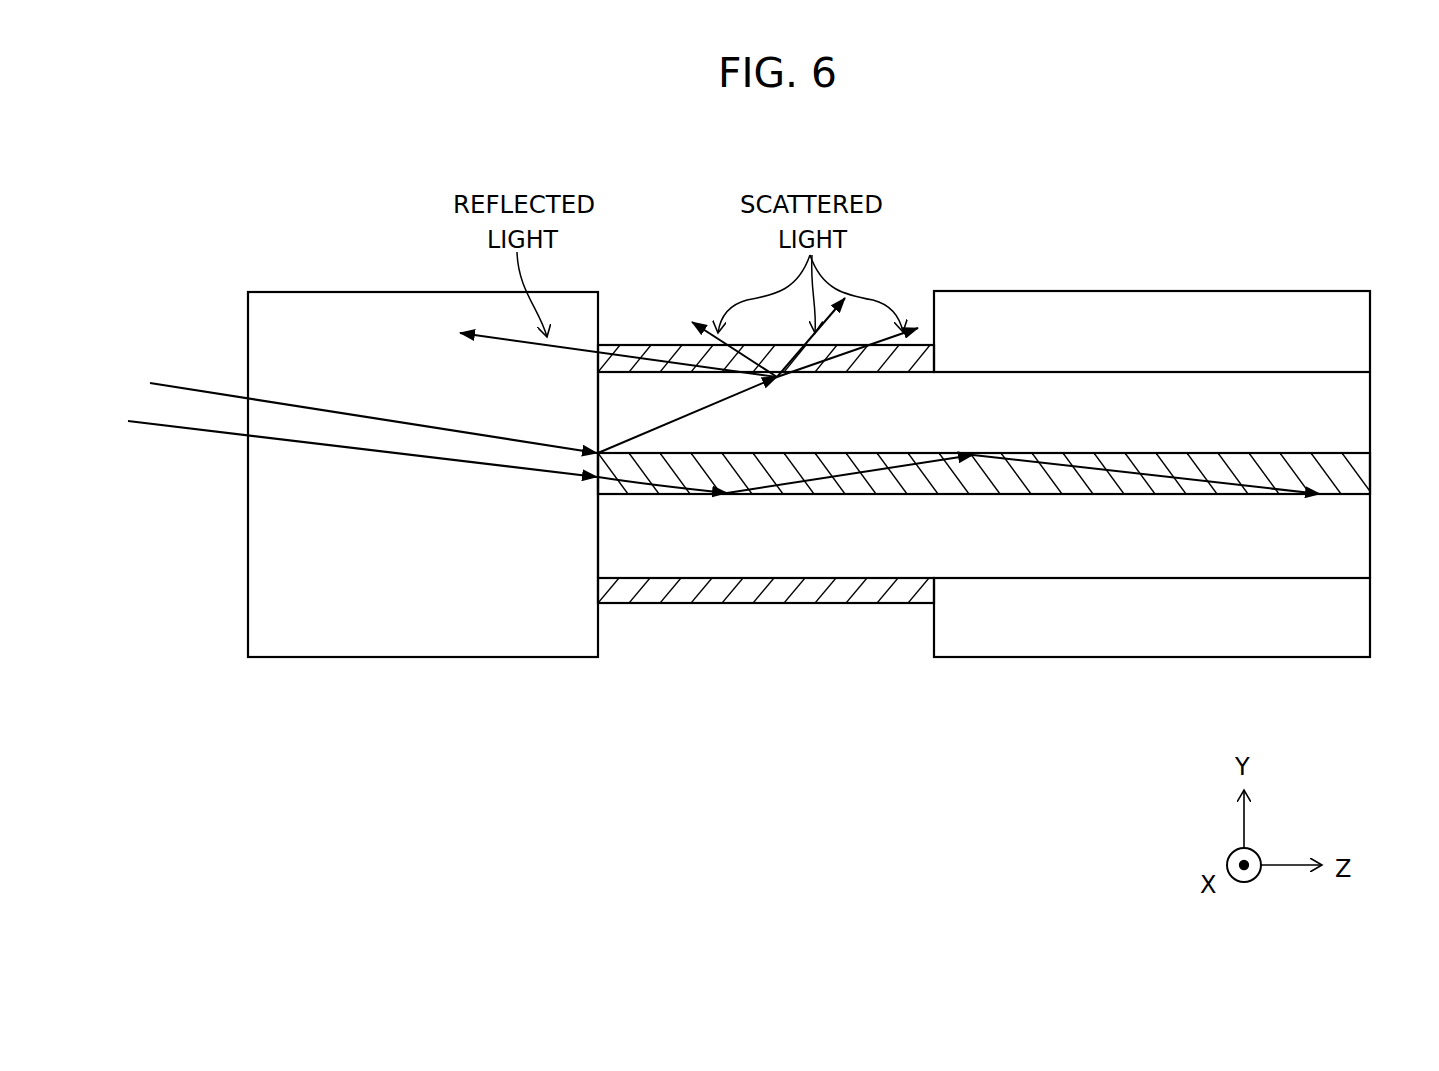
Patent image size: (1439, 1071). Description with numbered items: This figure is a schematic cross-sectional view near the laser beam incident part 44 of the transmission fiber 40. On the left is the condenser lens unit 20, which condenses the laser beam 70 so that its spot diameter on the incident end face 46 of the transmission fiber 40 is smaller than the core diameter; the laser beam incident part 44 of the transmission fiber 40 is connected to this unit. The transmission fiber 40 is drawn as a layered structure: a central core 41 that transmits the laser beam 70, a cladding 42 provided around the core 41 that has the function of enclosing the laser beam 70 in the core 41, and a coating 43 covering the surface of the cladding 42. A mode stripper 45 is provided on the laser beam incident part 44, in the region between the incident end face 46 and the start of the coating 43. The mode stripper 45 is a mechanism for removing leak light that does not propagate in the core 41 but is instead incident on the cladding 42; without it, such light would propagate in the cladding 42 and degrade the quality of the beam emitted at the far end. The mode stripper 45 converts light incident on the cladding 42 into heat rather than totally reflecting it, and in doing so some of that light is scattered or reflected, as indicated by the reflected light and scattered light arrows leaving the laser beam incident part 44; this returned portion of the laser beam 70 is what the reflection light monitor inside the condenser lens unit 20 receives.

The condenser lens unit 20 is at (357, 291).
The laser beam 70 is at (210, 390).
The transmission fiber 40 is at (1292, 211).
The core 41 is at (1372, 475).
The cladding 42 is at (1372, 412).
The coating 43 is at (1137, 291).
The laser beam incident part 44 is at (981, 503).
The mode stripper 45 is at (630, 343).
The incident end face 46 is at (596, 524).